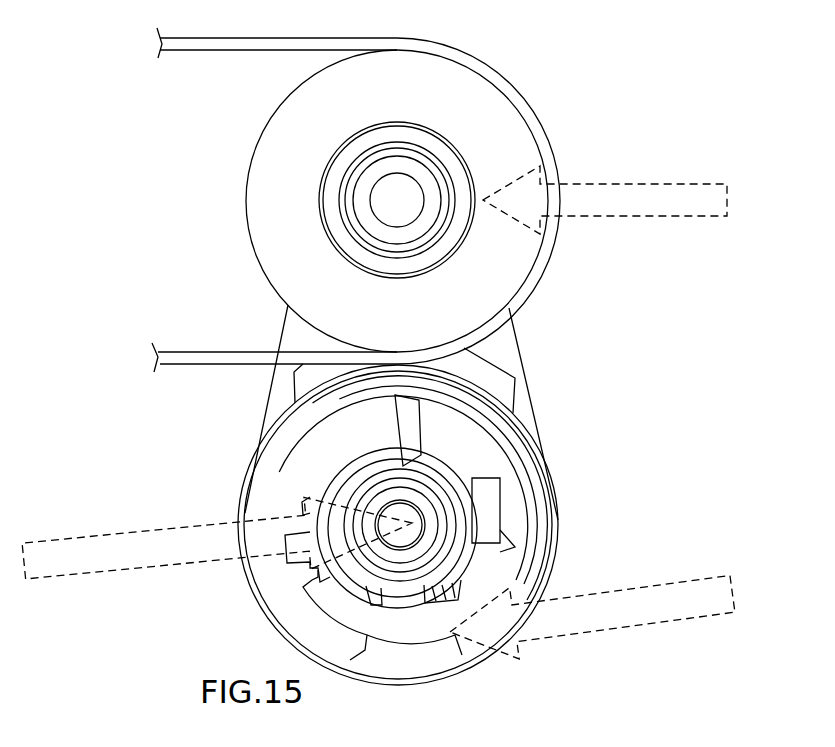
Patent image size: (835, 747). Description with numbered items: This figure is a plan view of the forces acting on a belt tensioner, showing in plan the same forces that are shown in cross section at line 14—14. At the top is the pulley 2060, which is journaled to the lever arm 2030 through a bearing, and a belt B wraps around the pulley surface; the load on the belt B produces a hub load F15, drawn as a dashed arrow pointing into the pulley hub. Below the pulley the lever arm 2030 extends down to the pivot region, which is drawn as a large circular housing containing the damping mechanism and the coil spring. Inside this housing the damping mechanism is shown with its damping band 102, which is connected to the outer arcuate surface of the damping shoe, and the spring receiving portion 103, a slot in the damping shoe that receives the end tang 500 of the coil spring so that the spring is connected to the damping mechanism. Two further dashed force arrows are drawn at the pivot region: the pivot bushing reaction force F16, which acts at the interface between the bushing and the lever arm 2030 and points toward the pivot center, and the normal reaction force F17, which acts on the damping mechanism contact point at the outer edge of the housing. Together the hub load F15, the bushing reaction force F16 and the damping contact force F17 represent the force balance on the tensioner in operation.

The belt B is at (258, 45).
The pulley 2060 is at (276, 140).
The lever arm 2030 is at (503, 343).
The spring receiving portion 103 is at (492, 458).
The damping band 102 is at (524, 493).
The end tang 500 is at (497, 540).
The hub load F15 is at (652, 200).
The pivot bushing reaction force F16 is at (130, 552).
The normal reaction force F17 is at (660, 600).
The section line 14 is at (397, 68).